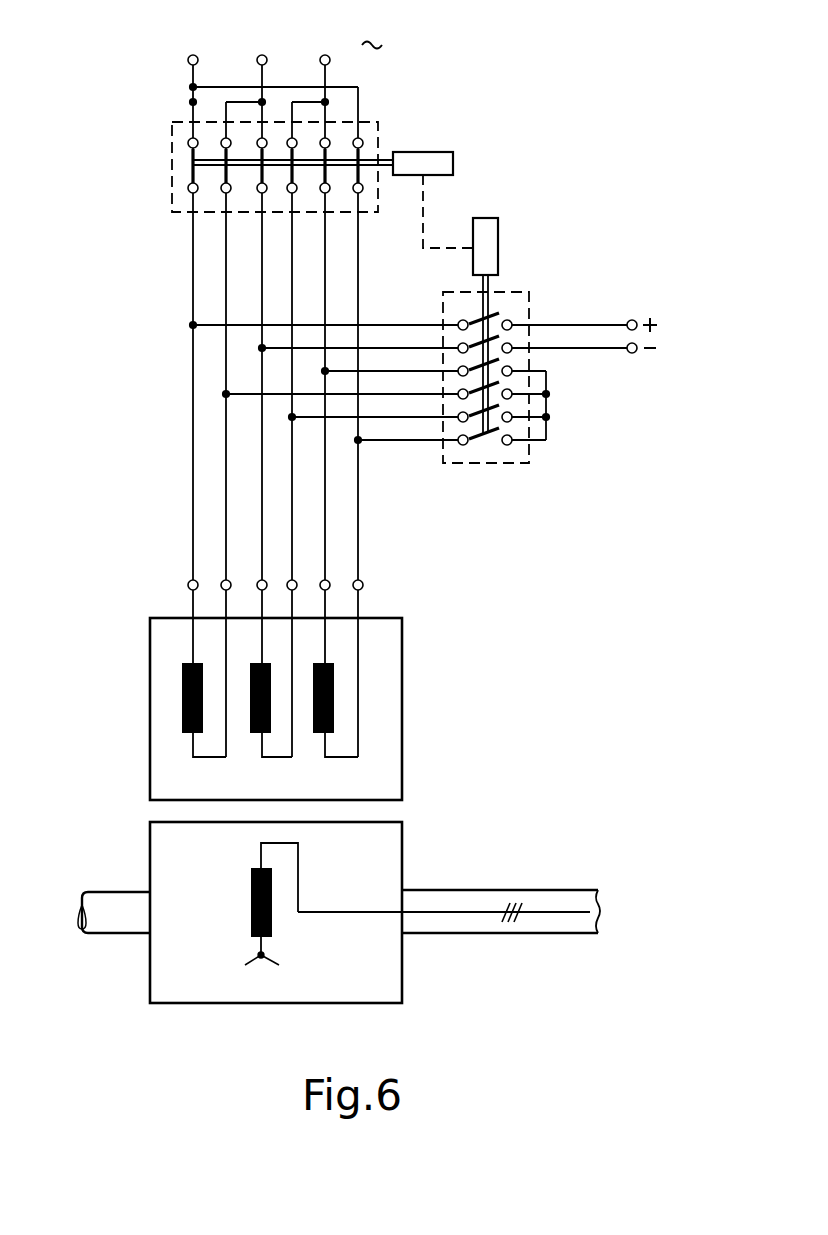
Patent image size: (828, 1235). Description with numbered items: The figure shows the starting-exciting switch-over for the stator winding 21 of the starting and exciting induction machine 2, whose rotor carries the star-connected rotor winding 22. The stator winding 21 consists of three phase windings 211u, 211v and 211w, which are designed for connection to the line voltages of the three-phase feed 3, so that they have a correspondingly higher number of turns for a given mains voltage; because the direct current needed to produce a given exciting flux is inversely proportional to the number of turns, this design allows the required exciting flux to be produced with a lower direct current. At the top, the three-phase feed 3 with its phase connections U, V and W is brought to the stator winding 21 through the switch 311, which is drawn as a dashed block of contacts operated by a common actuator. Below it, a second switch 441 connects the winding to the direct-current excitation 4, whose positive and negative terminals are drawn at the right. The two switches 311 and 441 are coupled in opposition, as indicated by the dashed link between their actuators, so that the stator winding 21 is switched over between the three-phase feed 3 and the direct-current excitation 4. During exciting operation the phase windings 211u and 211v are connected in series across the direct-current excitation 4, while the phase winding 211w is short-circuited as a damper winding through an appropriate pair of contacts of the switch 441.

The three-phase feed 3 is at (234, 52).
The switch 311 is at (426, 122).
The switch 441 is at (541, 505).
The direct-current excitation 4 is at (693, 351).
The stator winding 21 is at (387, 668).
The phase winding 211u is at (185, 735).
The phase winding 211v is at (254, 735).
The phase winding 211w is at (320, 735).
The starting and exciting induction machine 2 is at (100, 863).
The rotor winding 22 is at (251, 900).